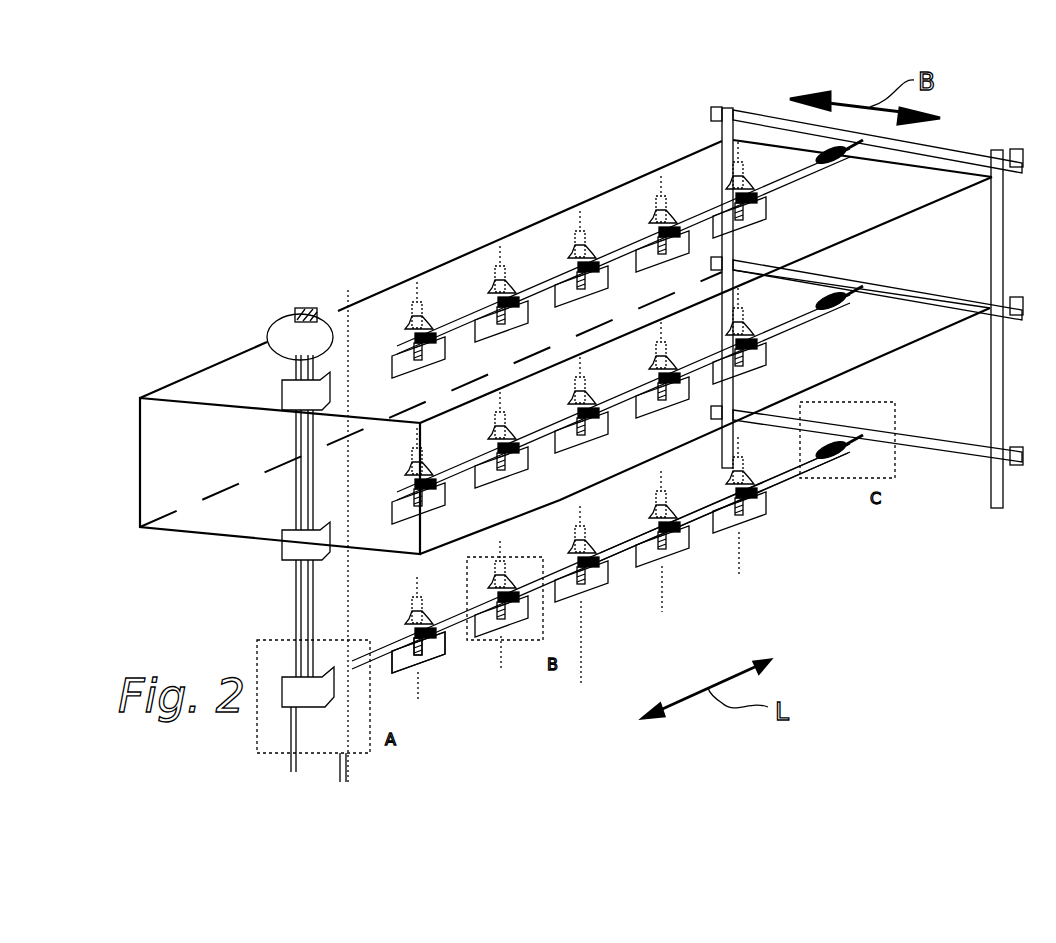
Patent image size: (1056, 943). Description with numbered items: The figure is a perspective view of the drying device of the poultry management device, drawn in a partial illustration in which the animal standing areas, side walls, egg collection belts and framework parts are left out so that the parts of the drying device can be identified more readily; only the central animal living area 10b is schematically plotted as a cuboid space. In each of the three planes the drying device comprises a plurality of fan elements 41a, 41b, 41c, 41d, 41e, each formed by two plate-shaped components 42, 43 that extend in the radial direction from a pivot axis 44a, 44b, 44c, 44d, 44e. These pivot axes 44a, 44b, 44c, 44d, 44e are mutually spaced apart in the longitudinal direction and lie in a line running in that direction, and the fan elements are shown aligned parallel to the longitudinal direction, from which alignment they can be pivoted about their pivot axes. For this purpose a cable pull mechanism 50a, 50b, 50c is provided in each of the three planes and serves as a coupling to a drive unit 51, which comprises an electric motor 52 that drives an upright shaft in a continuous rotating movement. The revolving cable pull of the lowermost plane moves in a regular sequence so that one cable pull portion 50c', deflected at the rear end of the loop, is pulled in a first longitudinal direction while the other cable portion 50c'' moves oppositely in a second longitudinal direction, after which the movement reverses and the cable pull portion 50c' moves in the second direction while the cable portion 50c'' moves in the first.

The central animal living area 10b is at (212, 442).
The drive unit 51 is at (340, 270).
The electric motor 52 is at (300, 328).
The fan element 41a is at (398, 627).
The fan element 41b is at (526, 590).
The fan element 41c is at (592, 555).
The fan element 41d is at (683, 517).
The fan element 41e is at (718, 522).
The plate-shaped component 42 is at (405, 660).
The plate-shaped component 43 is at (440, 648).
The pivot axis 44a is at (425, 700).
The pivot axis 44b is at (503, 668).
The pivot axis 44c is at (581, 648).
The pivot axis 44d is at (658, 607).
The pivot axis 44e is at (740, 562).
The cable pull mechanism 50a is at (806, 199).
The cable pull mechanism 50b is at (826, 333).
The cable pull mechanism 50c is at (654, 552).
The cable pull portion 50c' is at (703, 518).
The cable portion 50c'' is at (795, 455).